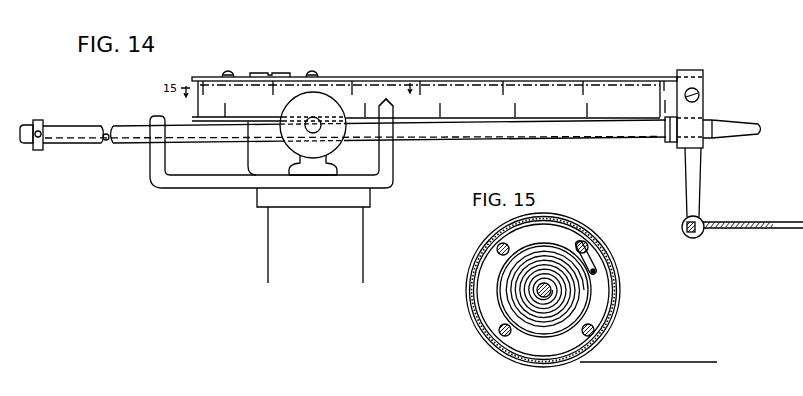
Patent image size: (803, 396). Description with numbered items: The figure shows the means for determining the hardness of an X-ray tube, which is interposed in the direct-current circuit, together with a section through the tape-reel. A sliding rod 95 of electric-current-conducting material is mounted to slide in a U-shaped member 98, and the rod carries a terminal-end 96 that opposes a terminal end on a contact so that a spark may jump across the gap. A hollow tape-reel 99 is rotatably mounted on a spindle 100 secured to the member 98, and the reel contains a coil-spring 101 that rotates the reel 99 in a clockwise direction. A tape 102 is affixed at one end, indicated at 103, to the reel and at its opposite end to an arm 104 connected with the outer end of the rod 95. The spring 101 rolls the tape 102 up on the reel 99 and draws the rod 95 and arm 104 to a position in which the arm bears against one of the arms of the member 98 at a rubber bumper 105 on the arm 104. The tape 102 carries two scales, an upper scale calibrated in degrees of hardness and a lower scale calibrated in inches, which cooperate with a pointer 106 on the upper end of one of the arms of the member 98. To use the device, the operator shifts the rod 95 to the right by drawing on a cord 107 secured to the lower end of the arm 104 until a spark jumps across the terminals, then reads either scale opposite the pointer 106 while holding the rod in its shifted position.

In FIG. 14, the sliding rod 95 is at (441, 128).
In FIG. 14, the terminal-end 96 is at (758, 128).
In FIG. 14, the U-shaped member 98 is at (388, 170).
In FIG. 15, the hollow tape-reel 99 is at (480, 319).
In FIG. 14, the spindle 100 is at (262, 72).
In FIG. 15, the spindle 100 is at (548, 291).
In FIG. 15, the coil-spring 101 is at (596, 262).
In FIG. 14, the tape 102 is at (485, 83).
In FIG. 15, the tape 102 is at (507, 357).
In FIG. 15, the affixed end of tape 103 is at (468, 288).
In FIG. 14, the arm 104 is at (698, 87).
In FIG. 14, the rubber bumper 105 is at (665, 140).
In FIG. 14, the pointer 106 is at (387, 100).
In FIG. 14, the cord 107 is at (760, 228).